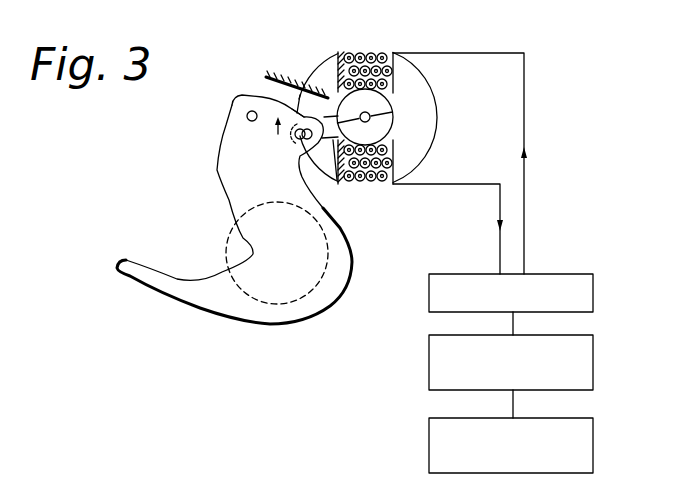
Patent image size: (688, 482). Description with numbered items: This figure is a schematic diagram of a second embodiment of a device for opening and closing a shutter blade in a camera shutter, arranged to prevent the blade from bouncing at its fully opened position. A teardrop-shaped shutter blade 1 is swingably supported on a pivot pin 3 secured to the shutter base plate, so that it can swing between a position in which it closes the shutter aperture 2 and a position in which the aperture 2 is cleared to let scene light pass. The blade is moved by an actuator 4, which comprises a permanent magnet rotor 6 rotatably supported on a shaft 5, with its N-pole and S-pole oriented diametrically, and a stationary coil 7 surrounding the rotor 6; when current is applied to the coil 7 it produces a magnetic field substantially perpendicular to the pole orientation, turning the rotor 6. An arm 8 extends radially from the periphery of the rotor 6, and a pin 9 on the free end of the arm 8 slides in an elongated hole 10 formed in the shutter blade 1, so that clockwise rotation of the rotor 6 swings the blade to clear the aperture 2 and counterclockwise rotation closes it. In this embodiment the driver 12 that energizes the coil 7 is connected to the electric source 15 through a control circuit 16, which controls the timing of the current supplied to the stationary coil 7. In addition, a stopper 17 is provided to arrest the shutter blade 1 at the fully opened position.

The shutter blade 1 is at (210, 308).
The shutter aperture 2 is at (292, 305).
The pivot pin 3 is at (238, 113).
The actuator 4 is at (408, 93).
The shaft 5 is at (372, 110).
The permanent magnet rotor 6 is at (390, 125).
The stationary coil 7 is at (356, 52).
The arm 8 is at (323, 138).
The pin 9 is at (278, 103).
The elongated hole 10 is at (296, 139).
The driver 12 is at (593, 295).
The electric source 15 is at (593, 447).
The control circuit 16 is at (593, 367).
The stopper 17 is at (293, 77).